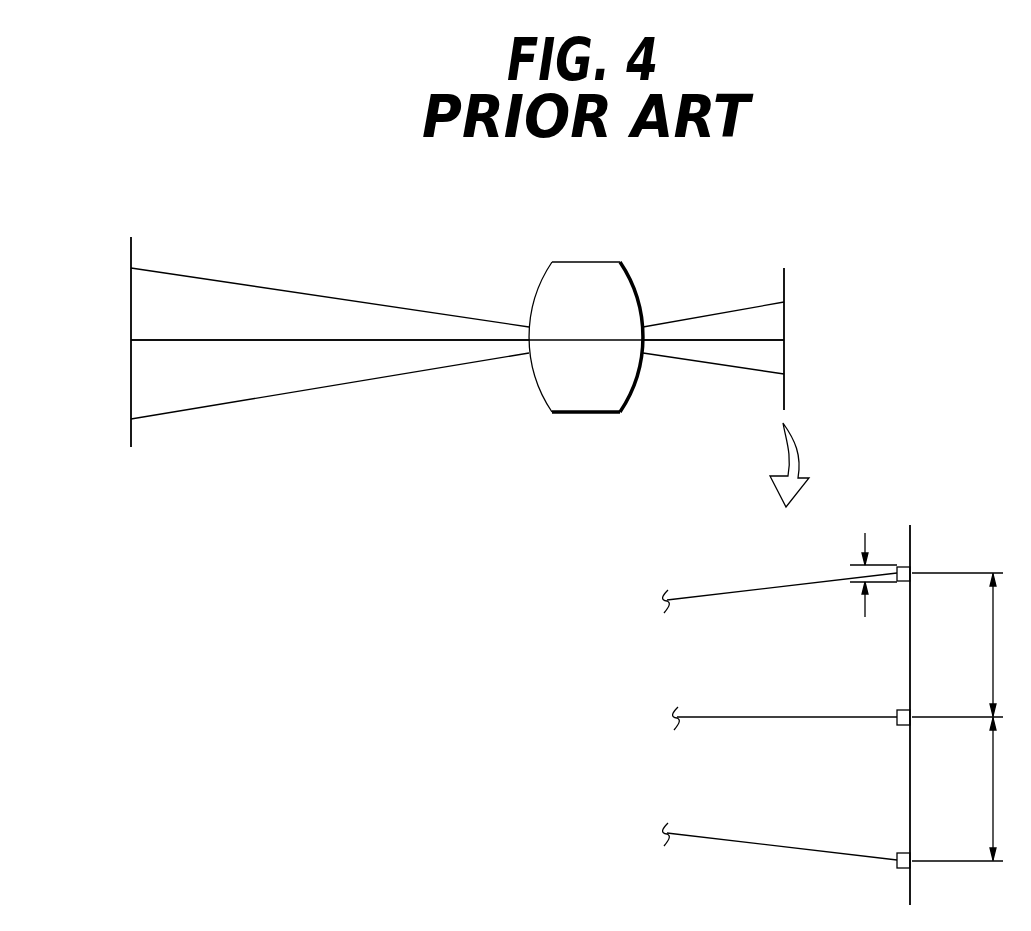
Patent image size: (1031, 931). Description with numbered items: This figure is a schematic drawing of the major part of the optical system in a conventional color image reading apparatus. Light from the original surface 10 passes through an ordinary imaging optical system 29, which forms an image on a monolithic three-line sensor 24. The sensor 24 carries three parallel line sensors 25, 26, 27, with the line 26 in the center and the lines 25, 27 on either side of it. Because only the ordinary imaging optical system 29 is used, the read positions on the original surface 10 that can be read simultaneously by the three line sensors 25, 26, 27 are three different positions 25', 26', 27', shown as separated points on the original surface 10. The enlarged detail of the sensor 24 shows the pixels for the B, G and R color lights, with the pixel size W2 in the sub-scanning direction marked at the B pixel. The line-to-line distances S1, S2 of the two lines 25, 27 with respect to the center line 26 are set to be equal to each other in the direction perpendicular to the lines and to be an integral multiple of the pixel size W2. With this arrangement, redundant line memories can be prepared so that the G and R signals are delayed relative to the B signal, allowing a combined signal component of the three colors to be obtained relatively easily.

The original surface 10 is at (133, 251).
The ordinary imaging optical system 29 is at (590, 262).
The monolithic 3-line sensor 24 is at (784, 282).
The line sensor 25 is at (758, 302).
The center line sensor 26 is at (758, 331).
The line sensor 27 is at (758, 368).
The read position 25' is at (284, 386).
The read position 26' is at (285, 320).
The read position 27' is at (287, 279).
The pixel size W2 is at (856, 573).
The B color light / B signal B is at (786, 575).
The G color light / G signal G is at (791, 704).
The R color light / R signal R is at (786, 844).
The line-to-line distance S1 is at (971, 645).
The line-to-line distance S2 is at (971, 789).